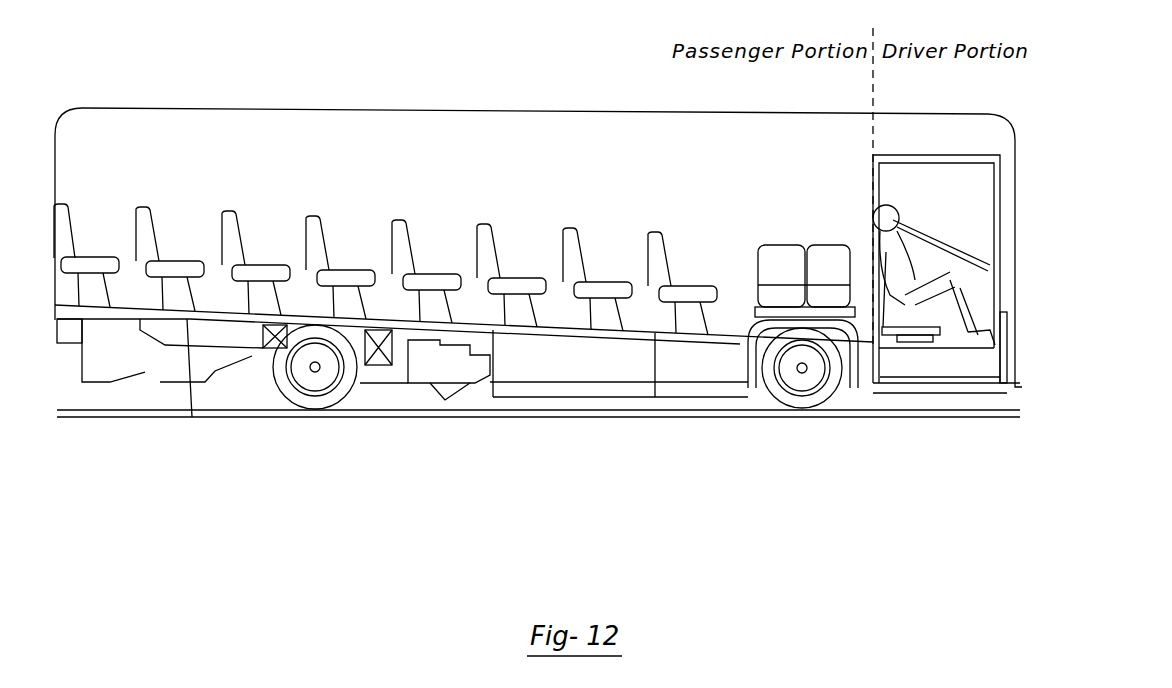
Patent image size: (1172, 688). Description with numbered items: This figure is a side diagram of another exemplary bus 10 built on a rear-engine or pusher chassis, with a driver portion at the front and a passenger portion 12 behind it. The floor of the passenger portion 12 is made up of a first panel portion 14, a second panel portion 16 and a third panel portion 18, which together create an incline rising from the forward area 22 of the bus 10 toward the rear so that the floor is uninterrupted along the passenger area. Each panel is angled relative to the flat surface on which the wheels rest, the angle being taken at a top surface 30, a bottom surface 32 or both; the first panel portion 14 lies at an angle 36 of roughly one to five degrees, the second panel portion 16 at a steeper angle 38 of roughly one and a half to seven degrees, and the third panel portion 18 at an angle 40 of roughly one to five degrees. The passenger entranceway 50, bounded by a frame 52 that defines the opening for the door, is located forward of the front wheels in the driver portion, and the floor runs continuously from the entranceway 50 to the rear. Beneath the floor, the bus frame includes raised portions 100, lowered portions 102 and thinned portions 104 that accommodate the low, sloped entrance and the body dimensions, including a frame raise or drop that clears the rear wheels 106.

The bus 10 is at (1052, 102).
The passenger portion 12 is at (370, 108).
The first panel portion 14 is at (727, 337).
The second panel portion 16 is at (493, 335).
The third panel portion 18 is at (213, 305).
The forward area 22 is at (775, 315).
The top surface 30 is at (650, 335).
The bottom surface 32 is at (562, 333).
The angle 36 is at (655, 373).
The angle 38 is at (460, 368).
The angle 40 is at (188, 360).
The passenger entranceway 50 is at (907, 407).
The frame 52 is at (1002, 235).
The raised portions 100 is at (252, 333).
The lowered portions 102 is at (632, 390).
The thinned portions 104 is at (733, 385).
The rear wheels 106 is at (330, 413).